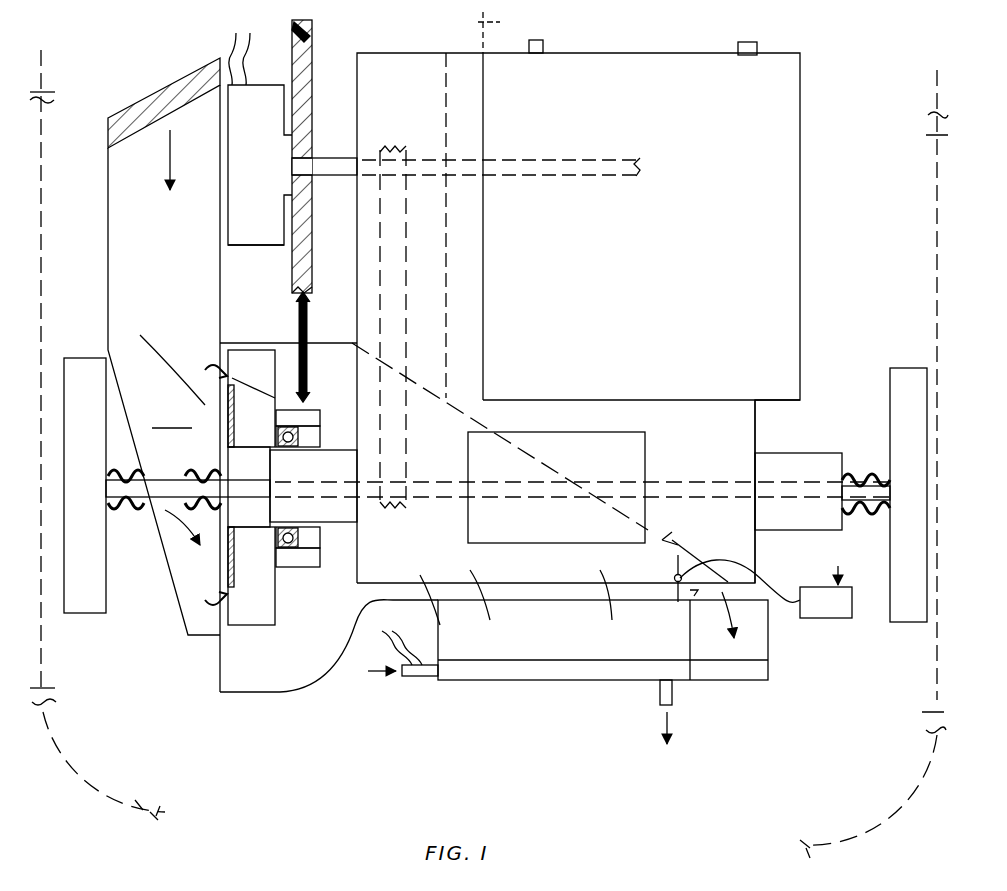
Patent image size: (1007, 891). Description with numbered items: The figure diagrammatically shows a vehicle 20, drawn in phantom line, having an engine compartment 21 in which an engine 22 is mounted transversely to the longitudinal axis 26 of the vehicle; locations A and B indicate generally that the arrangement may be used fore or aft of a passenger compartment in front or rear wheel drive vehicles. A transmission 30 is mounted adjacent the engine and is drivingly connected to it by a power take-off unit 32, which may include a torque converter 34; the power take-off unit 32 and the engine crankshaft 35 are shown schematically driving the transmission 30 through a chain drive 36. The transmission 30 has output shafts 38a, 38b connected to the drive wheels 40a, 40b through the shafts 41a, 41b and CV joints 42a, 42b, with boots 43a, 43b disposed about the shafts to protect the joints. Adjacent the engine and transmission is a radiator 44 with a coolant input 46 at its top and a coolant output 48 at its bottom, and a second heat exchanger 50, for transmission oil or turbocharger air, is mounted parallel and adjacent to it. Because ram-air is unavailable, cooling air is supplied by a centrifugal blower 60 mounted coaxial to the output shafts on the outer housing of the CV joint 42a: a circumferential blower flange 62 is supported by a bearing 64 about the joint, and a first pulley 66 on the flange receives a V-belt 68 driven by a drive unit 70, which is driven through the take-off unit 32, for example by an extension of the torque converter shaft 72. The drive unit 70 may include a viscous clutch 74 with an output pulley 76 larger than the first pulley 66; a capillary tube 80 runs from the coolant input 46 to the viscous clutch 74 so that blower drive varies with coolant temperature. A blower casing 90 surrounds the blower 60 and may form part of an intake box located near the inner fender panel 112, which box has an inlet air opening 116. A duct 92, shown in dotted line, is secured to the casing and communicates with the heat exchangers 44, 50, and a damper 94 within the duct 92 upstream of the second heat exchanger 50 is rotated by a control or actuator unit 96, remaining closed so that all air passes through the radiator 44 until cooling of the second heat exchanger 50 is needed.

The vehicle 20 is at (126, 814).
The engine compartment 21 is at (874, 464).
The engine 22 is at (641, 264).
The longitudinal axis 26 is at (504, 32).
The transmission 30 is at (752, 426).
The power take-off unit 32 is at (386, 67).
The torque converter 34 is at (464, 68).
The engine crankshaft 35 is at (594, 176).
The chain drive 36 is at (412, 258).
The output shaft 38a is at (434, 500).
The output shaft 38b is at (726, 480).
The drive wheel 40a is at (84, 358).
The drive wheel 40b is at (905, 368).
The shaft 41a is at (170, 480).
The shaft 41b is at (878, 470).
The continuously variable (CV) joint 42a is at (338, 528).
The continuously variable (CV) joint 42b is at (791, 524).
The boot 43a is at (222, 520).
The boot 43b is at (850, 468).
The radiator 44 is at (572, 674).
The coolant input 46 is at (542, 44).
The coolant output 48 is at (748, 12).
The second heat exchanger 50 is at (750, 658).
The centrifugal fan or blower 60 is at (246, 360).
The blower flange 62 is at (288, 588).
The bearing 64 is at (285, 541).
The first pulley 66 is at (308, 402).
The V-belt 68 is at (310, 314).
The drive unit 70 is at (270, 84).
The torque converter shaft 72 is at (350, 166).
The viscous clutch 74 is at (258, 247).
The output pulley 76 is at (318, 40).
The capillary tube 80 is at (234, 40).
The blower casing 90 is at (298, 690).
The duct 92 is at (676, 536).
The damper 94 is at (674, 578).
The control or actuator unit 96 is at (834, 618).
The inner fender panel 112 is at (44, 218).
The inlet air opening 116 is at (188, 82).